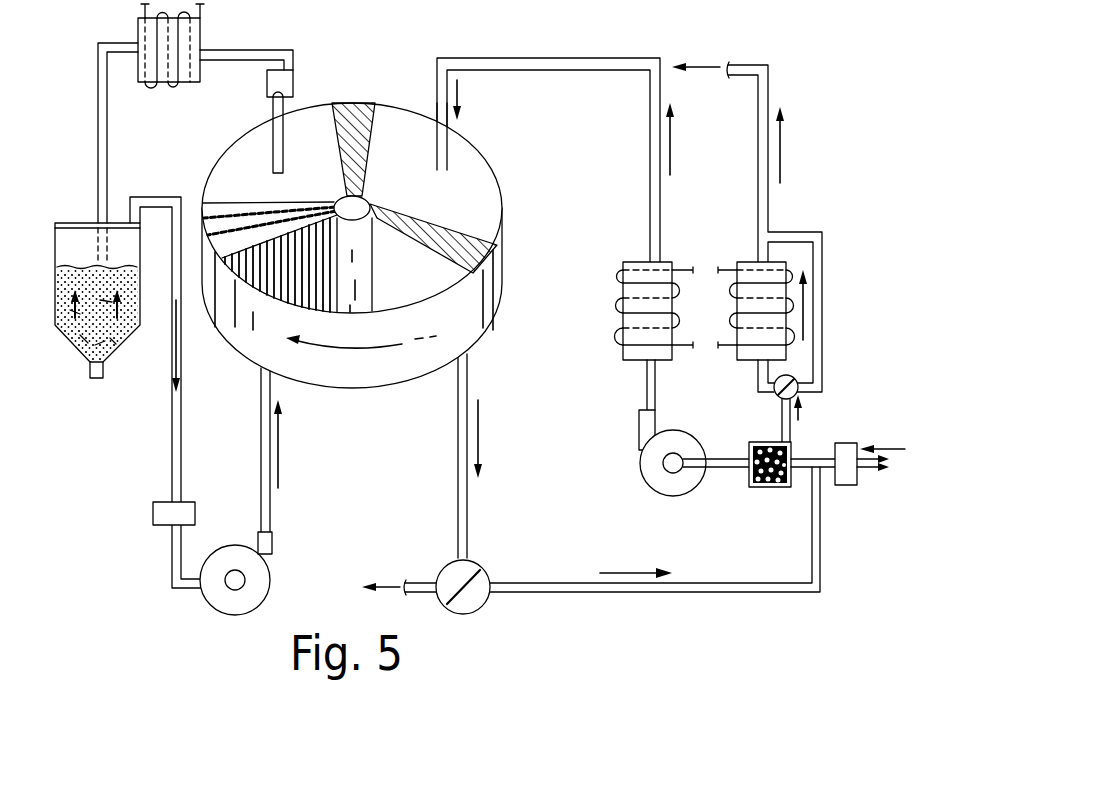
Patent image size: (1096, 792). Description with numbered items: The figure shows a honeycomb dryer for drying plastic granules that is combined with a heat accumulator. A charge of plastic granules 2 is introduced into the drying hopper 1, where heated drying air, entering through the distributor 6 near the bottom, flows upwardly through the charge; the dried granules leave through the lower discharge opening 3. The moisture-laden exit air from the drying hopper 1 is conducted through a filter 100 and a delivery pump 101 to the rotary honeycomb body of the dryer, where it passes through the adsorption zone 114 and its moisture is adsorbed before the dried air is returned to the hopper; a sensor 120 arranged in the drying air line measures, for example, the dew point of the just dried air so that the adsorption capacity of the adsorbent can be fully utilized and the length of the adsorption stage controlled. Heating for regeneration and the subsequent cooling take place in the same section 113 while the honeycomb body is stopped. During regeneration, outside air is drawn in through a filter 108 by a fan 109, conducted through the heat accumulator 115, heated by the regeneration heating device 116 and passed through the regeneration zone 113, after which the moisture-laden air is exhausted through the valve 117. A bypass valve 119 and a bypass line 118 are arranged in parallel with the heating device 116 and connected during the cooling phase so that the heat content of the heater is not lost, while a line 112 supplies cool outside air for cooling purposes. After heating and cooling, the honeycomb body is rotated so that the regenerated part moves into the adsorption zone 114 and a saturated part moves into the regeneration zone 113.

The drying hopper 1 is at (70, 222).
The plastic granules 2 is at (140, 326).
The lower discharge opening 3 is at (96, 381).
The distributor 6 is at (80, 356).
The filter 100 is at (153, 513).
The delivery pump 101 is at (262, 576).
The filter 108 is at (846, 475).
The fan 109 is at (655, 481).
The line 112 is at (198, 35).
The regeneration zone 113 is at (382, 256).
The adsorption zone 114 is at (262, 266).
The heat accumulator 115 is at (770, 490).
The regeneration heating device 116 is at (630, 288).
The valve 117 is at (448, 570).
The bypass line 118 is at (822, 232).
The bypass valve 119 is at (776, 393).
The sensor 120 is at (295, 72).